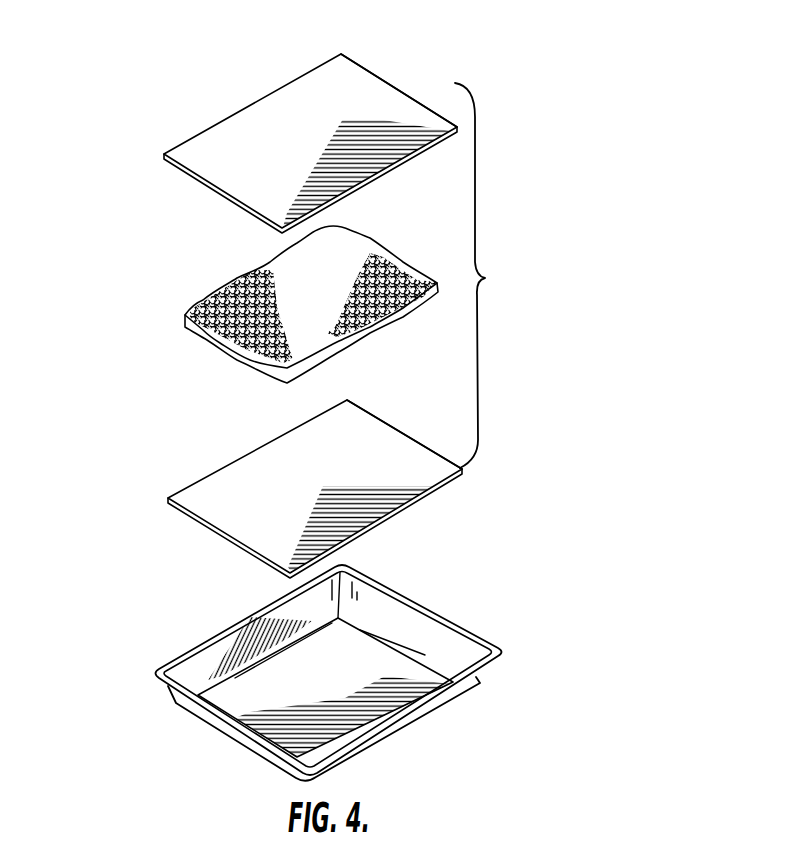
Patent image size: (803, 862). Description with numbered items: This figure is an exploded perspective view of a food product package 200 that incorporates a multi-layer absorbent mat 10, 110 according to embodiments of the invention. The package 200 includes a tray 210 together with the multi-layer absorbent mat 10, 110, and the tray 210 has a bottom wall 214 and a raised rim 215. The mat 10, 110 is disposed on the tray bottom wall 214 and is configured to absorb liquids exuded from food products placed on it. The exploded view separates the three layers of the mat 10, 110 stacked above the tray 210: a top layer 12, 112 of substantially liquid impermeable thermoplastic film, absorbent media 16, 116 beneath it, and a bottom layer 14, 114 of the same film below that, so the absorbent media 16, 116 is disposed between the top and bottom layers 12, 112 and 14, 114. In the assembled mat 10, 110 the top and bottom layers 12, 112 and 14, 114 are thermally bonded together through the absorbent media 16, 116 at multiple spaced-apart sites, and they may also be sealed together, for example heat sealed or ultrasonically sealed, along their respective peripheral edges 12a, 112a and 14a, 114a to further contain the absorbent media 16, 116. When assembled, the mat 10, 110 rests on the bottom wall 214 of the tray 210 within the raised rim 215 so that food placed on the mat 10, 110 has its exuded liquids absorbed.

The food product package 200 is at (112, 303).
The multi-layer absorbent mat 10 is at (364, 289).
The multi-layer absorbent mat 110 is at (496, 278).
The top layer 12 is at (321, 116).
The top layer 112 is at (257, 123).
The peripheral edge 12a is at (409, 63).
The peripheral edge 112a is at (377, 72).
The absorbent media 16 is at (312, 282).
The absorbent media 116 is at (353, 250).
The bottom layer 14 is at (315, 463).
The bottom layer 114 is at (402, 455).
The peripheral edge 14a is at (404, 409).
The peripheral edge 114a is at (388, 418).
The tray 210 is at (474, 619).
The bottom wall 214 is at (334, 691).
The raised rim 215 is at (408, 620).